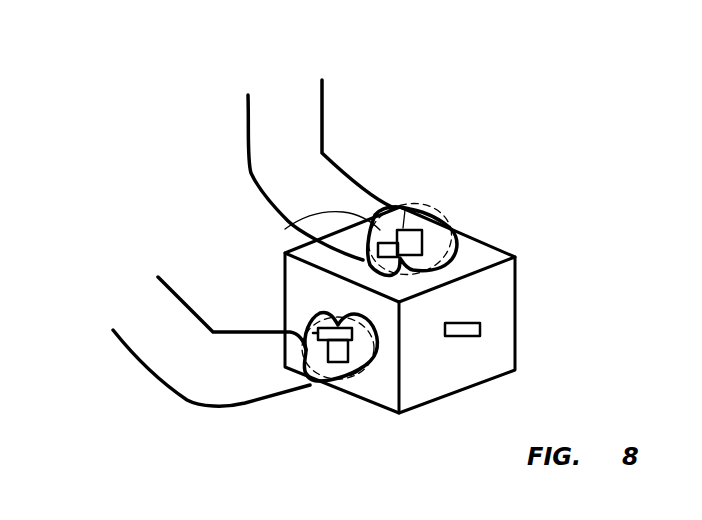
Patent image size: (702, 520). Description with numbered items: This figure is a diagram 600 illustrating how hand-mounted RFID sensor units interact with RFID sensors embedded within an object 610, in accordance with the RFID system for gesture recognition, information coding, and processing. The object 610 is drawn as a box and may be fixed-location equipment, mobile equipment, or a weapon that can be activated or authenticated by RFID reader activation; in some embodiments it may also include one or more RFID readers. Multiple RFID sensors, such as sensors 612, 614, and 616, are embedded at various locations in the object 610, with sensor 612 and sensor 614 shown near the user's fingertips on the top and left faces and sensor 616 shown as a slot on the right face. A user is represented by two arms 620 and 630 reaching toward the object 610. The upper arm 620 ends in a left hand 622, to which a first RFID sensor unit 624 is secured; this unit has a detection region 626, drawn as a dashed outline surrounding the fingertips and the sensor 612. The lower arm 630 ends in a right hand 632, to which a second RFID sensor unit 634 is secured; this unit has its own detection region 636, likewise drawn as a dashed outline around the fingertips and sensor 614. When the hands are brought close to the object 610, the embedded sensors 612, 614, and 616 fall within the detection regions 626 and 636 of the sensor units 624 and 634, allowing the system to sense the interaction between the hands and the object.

The diagram 600 is at (165, 116).
The object 610 is at (480, 238).
The RFID sensor 612 is at (285, 229).
The RFID sensor 614 is at (336, 328).
The RFID sensor 616 is at (480, 335).
The arm 620 is at (324, 118).
The left hand 622 is at (456, 226).
The first RFID sensor unit 624 is at (404, 228).
The detection region 626 is at (416, 211).
The arm 630 is at (147, 367).
The right hand 632 is at (337, 377).
The second RFID sensor unit 634 is at (360, 372).
The detection region 636 is at (298, 352).